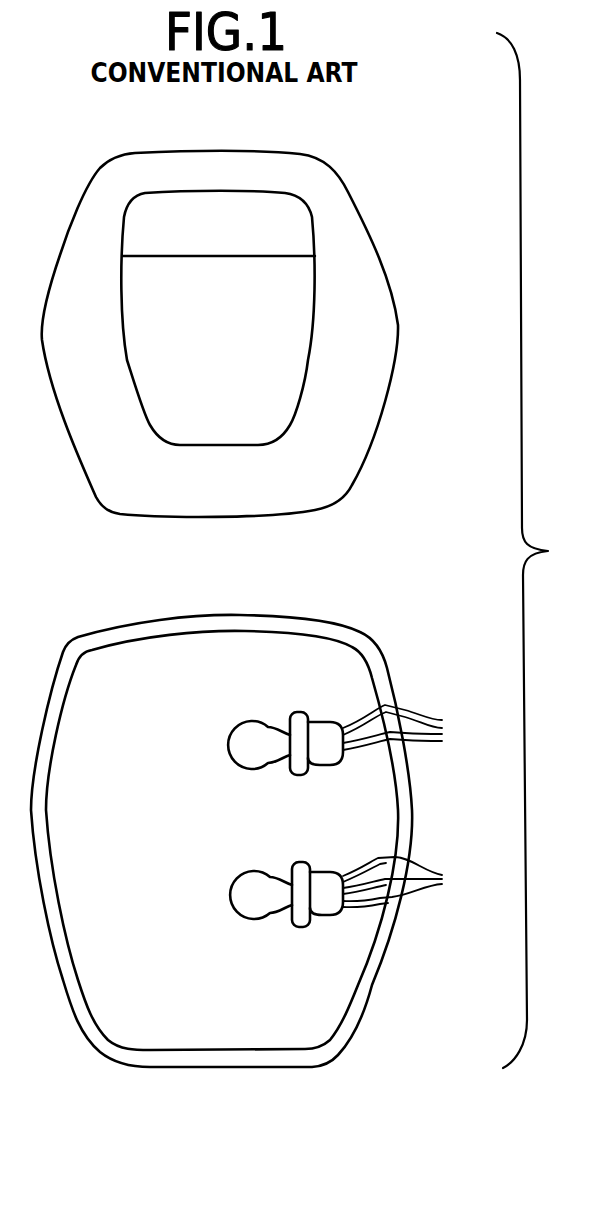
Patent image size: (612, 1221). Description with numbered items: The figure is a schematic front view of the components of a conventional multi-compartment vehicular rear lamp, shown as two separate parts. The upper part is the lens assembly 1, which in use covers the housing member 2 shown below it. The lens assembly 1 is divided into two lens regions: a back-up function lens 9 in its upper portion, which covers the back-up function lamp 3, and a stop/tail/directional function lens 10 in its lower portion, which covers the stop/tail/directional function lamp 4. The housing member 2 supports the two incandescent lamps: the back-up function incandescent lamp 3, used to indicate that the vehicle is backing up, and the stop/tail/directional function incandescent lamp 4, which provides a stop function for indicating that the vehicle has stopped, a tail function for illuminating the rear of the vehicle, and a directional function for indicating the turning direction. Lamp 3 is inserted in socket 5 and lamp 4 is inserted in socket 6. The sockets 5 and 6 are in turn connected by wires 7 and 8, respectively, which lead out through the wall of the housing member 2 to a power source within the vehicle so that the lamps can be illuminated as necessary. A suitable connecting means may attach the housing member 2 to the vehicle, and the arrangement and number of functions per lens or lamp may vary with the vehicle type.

The lens assembly 1 is at (334, 188).
The housing member 2 is at (378, 650).
The back-up function incandescent lamp 3 is at (250, 718).
The stop/tail/directional function incandescent lamp 4 is at (252, 872).
The socket 5 is at (325, 720).
The socket 6 is at (325, 872).
The wires 7 is at (402, 727).
The wires 8 is at (403, 882).
The back-up function lens 9 is at (258, 209).
The stop/tail/directional function lens 10 is at (302, 293).